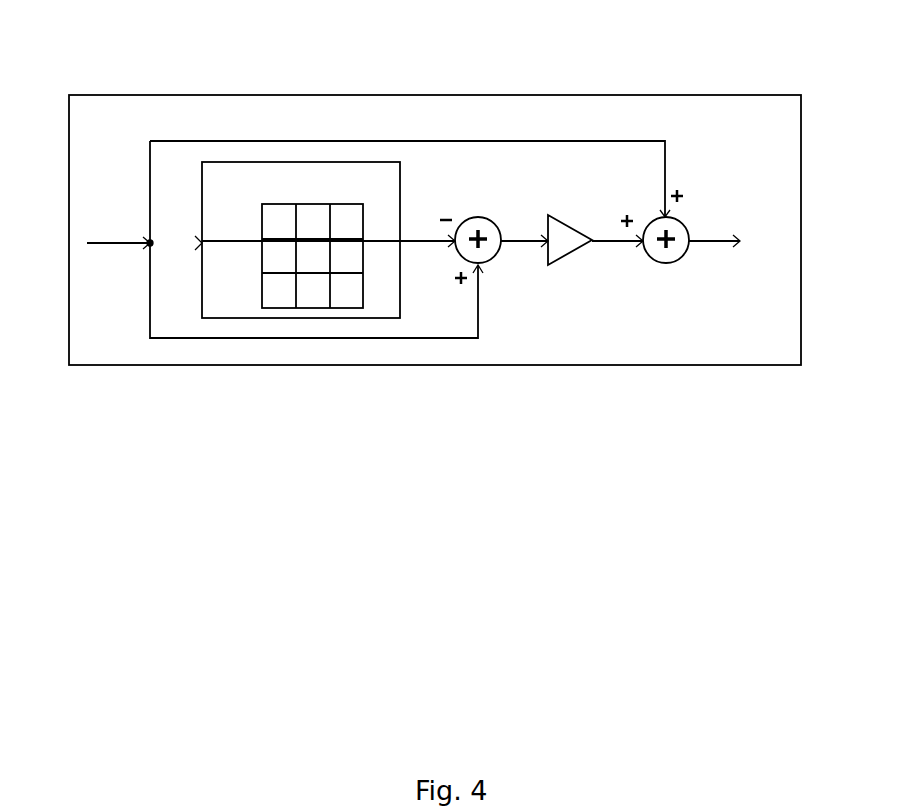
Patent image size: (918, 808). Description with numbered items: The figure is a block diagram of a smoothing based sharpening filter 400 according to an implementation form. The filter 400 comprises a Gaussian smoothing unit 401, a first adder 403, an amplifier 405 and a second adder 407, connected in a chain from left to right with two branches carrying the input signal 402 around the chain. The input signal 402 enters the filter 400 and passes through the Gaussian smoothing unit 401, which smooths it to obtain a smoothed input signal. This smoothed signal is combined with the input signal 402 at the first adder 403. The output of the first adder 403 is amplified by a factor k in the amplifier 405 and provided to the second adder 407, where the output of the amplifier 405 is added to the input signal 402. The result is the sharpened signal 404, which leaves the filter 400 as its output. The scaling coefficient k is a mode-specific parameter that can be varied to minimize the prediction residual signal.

The smoothing based sharpening filter 400 is at (351, 88).
The Gaussian smoothing unit 401 is at (188, 313).
The input signal 402 is at (83, 176).
The first adder 403 is at (470, 222).
The sharpened signal 404 is at (762, 183).
The amplifier 405 is at (573, 247).
The second adder 407 is at (674, 250).